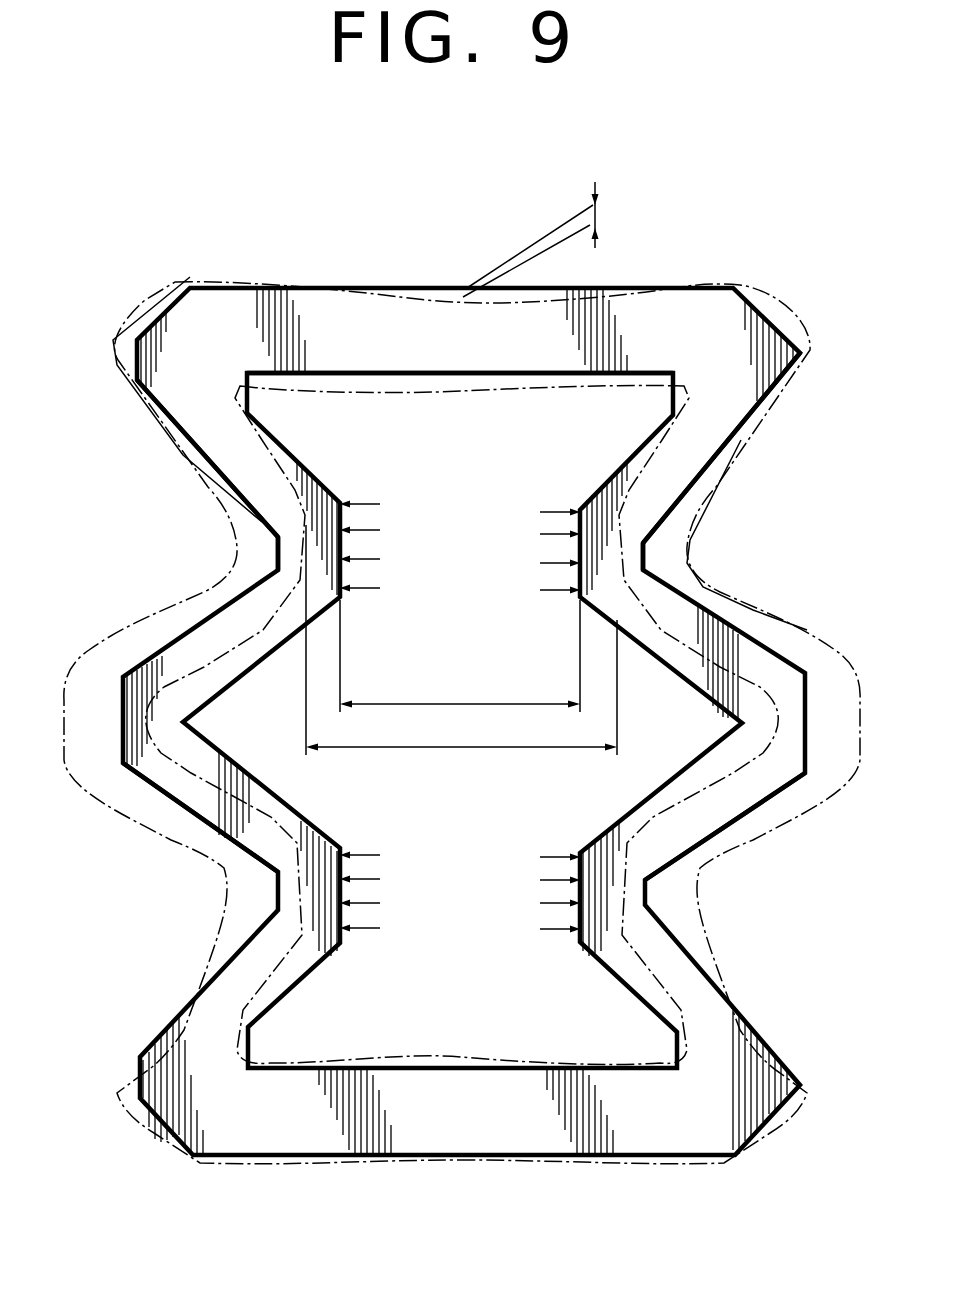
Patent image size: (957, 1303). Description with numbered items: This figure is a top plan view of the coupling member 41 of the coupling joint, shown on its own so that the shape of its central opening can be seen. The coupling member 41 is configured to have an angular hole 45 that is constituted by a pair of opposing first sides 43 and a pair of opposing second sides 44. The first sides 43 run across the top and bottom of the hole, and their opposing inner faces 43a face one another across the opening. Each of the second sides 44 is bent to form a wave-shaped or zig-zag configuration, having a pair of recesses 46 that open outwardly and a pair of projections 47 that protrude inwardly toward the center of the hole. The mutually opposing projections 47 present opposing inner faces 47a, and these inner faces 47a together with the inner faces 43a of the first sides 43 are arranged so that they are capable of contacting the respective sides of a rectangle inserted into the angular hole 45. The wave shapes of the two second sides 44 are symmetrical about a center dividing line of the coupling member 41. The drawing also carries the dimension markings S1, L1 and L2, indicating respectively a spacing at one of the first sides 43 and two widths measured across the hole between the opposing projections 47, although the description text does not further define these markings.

The coupling member 41 is at (313, 268).
The first sides 43 is at (393, 330).
The inner faces of the first sides 43a is at (540, 374).
The second sides 44 is at (222, 473).
The angular hole 45 is at (440, 374).
The recesses 46 is at (263, 522).
The projections 47 is at (343, 551).
The inner faces of the projections 47a is at (342, 868).
The gap dimension S1 is at (543, 239).
The inner face distance L1 is at (460, 656).
The deformed face distance L2 is at (461, 640).